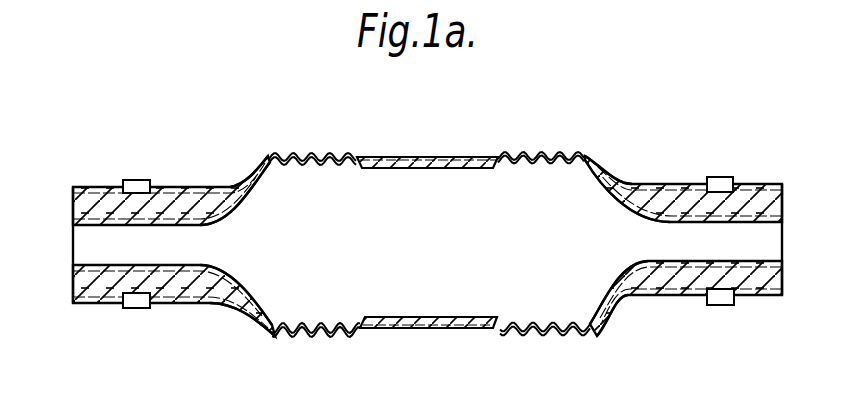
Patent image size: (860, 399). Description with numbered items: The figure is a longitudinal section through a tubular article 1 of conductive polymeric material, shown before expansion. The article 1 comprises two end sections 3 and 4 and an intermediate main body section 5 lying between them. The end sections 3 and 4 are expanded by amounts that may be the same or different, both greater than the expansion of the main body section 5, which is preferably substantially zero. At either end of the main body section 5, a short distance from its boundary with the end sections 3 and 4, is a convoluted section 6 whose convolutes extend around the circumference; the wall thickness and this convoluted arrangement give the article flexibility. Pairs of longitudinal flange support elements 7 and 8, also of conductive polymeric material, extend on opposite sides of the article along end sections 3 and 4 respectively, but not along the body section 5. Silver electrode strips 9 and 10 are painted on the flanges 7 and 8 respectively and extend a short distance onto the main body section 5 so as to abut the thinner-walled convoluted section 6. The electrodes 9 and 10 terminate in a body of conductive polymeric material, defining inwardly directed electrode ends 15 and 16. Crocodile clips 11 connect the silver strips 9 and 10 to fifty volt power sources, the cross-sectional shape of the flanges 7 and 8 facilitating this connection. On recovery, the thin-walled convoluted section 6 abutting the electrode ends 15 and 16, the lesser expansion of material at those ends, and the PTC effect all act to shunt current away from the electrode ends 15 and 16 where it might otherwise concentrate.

The tubular article 1 is at (616, 102).
The end section 3 is at (667, 172).
The end section 4 is at (152, 165).
The intermediate main body section 5 is at (452, 156).
The convoluted section 6 is at (548, 153).
The longitudinal flange support element 7 is at (784, 205).
The longitudinal flange support element 8 is at (73, 288).
The silver electrode strip 9 is at (765, 184).
The silver electrode strip 10 is at (95, 301).
The crocodile clip 11 is at (719, 177).
The inwardly directed electrode end 15 is at (594, 329).
The inwardly directed electrode end 16 is at (266, 158).